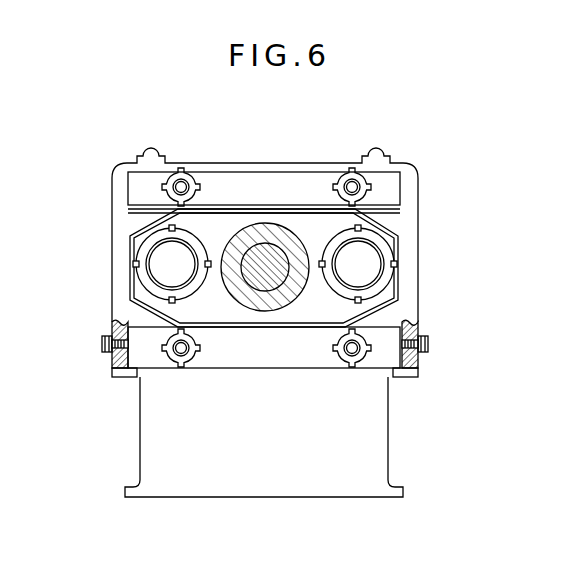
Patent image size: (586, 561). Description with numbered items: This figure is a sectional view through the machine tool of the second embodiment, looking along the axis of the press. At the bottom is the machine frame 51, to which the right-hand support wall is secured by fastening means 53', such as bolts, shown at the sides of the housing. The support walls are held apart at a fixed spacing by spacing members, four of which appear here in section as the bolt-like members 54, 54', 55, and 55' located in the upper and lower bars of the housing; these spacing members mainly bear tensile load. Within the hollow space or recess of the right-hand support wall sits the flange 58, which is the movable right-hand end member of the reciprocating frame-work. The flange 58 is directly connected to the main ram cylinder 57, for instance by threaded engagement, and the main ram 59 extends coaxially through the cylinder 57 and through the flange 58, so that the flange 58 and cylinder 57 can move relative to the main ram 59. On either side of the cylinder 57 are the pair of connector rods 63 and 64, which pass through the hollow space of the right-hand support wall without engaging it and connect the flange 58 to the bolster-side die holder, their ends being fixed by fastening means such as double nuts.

The machine frame 51 is at (280, 452).
The fastening means 53' is at (447, 347).
The spacing member 54 is at (352, 151).
The spacing member 54' is at (410, 372).
The spacing member 55 is at (183, 151).
The spacing member 55' is at (122, 372).
The main ram cylinder 57 is at (267, 225).
The flange 58 is at (219, 238).
The main ram 59 is at (253, 243).
The connector rod 63 is at (363, 268).
The connector rod 64 is at (162, 260).